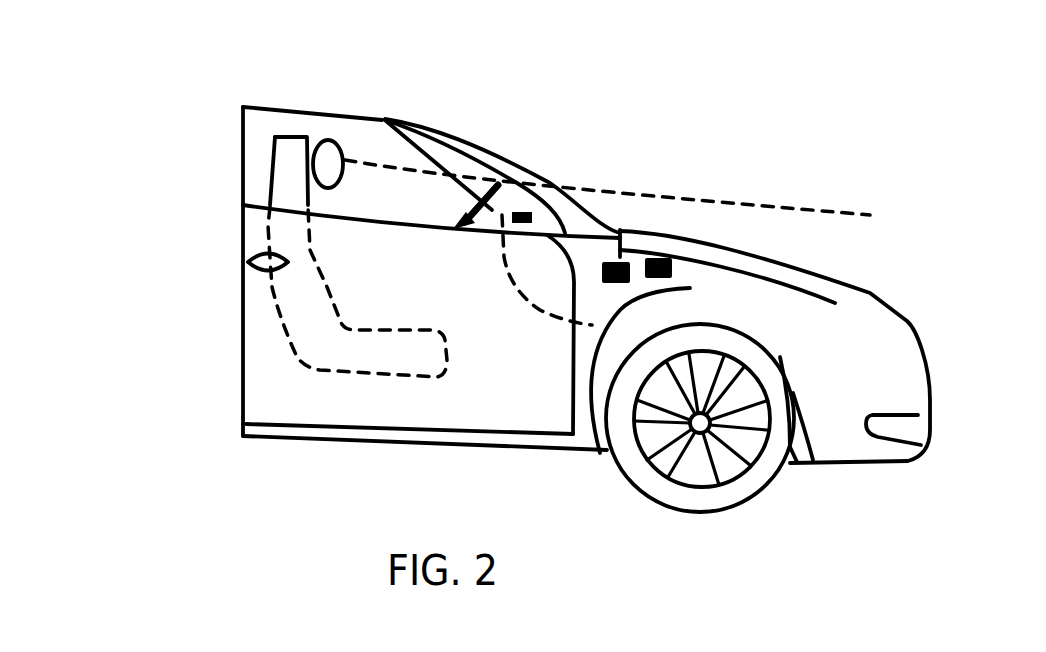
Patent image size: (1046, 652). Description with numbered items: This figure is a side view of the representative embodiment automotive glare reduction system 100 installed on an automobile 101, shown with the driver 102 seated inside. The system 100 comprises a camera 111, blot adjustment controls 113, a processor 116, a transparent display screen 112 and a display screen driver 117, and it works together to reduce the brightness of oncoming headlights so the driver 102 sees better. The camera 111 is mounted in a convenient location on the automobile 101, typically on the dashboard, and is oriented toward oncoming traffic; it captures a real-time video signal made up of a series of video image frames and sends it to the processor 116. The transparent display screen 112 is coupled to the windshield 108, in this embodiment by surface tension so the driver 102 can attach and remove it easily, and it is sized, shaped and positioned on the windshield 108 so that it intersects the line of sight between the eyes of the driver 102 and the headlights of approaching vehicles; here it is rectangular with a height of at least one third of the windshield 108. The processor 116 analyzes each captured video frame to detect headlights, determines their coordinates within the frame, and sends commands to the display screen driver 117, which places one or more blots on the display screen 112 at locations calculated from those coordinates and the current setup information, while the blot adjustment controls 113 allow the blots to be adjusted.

The automotive glare reduction system 100 is at (127, 80).
The automobile 101 is at (173, 192).
The driver 102 is at (338, 140).
The windshield 108 is at (507, 152).
The camera 111 is at (532, 215).
The transparent display screen 112 is at (553, 182).
The blot adjustment controls 113 is at (455, 225).
The processor 116 is at (603, 290).
The display screen driver 117 is at (673, 267).